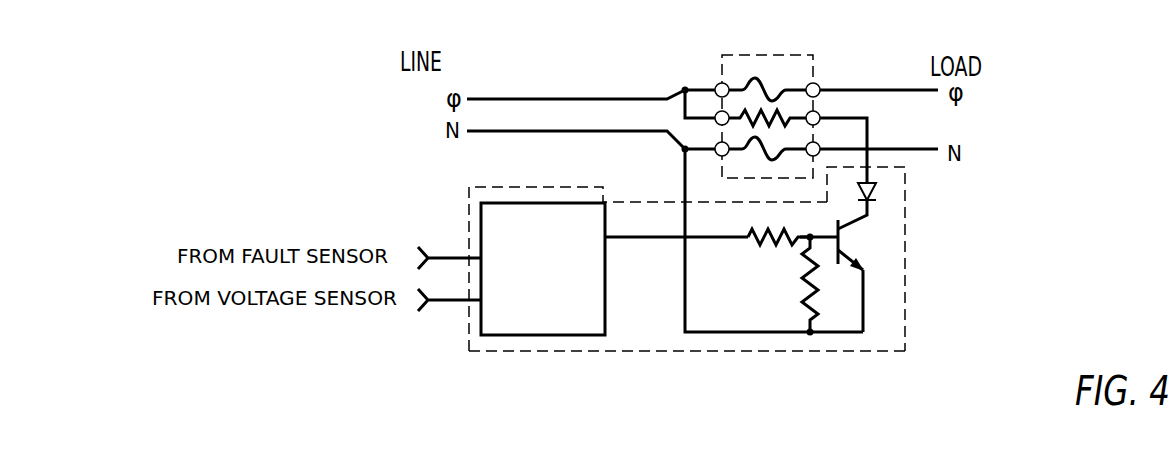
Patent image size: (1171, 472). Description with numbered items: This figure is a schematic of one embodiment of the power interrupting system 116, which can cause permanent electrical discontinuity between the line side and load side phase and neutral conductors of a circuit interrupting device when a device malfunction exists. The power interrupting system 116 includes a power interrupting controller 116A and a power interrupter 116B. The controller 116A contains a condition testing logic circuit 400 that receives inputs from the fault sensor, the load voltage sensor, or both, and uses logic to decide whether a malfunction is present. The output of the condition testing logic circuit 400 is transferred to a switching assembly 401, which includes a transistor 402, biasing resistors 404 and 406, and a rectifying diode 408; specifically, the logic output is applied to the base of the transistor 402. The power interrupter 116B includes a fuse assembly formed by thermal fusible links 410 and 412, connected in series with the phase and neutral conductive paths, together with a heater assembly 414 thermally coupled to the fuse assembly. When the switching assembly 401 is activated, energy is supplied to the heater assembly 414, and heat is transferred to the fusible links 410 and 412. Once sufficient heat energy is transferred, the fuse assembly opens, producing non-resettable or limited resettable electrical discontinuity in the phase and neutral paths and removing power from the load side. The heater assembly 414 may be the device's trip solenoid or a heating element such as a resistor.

The power interrupting system 116 is at (888, 396).
The power interrupting controller 116A is at (906, 262).
The power interrupter 116B is at (722, 80).
The condition testing logic circuit 400 is at (605, 306).
The switching assembly 401 is at (848, 318).
The transistor 402 is at (843, 248).
The biasing resistor 404 is at (770, 250).
The biasing resistor 406 is at (803, 284).
The rectifying diode 408 is at (875, 190).
The thermal fusible link 410 is at (767, 81).
The thermal fusible link 412 is at (763, 153).
The heater assembly 414 is at (783, 108).